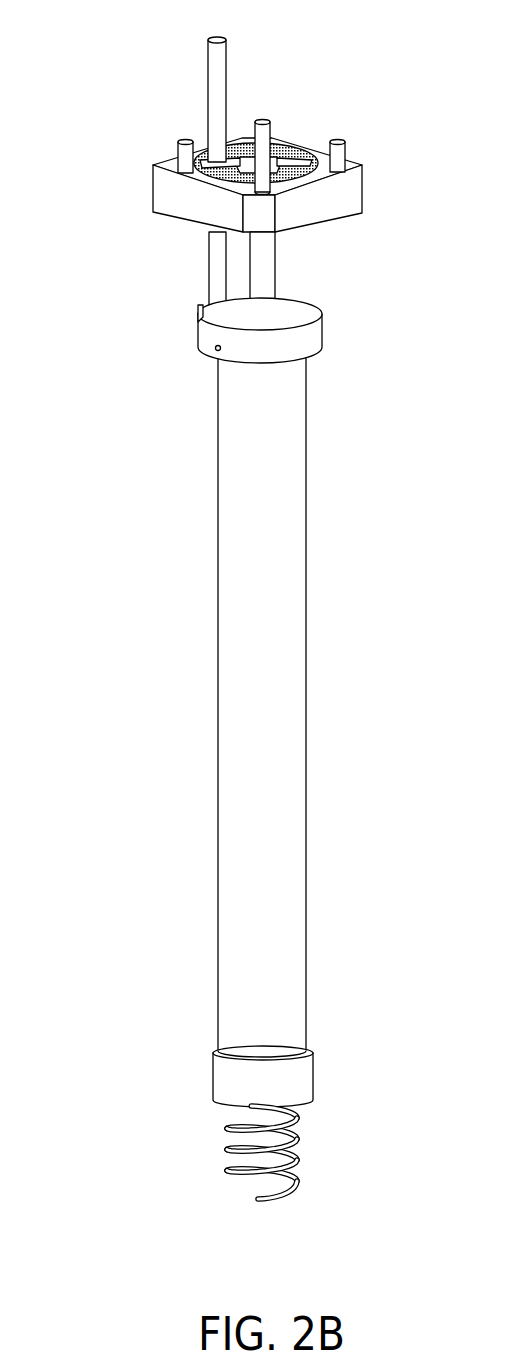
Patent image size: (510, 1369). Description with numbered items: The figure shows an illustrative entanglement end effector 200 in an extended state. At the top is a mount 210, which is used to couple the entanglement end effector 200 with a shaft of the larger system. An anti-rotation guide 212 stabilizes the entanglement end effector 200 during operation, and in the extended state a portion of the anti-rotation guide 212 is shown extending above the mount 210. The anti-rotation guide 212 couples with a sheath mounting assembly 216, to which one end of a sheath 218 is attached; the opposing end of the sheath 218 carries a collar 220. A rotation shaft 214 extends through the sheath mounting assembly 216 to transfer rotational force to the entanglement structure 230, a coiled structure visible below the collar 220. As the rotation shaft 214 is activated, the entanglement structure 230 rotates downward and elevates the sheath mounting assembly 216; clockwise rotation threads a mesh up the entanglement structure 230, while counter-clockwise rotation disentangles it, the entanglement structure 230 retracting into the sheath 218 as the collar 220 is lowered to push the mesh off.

The entanglement end effector 200 is at (103, 88).
The mount 210 is at (359, 190).
The anti-rotation guide 212 is at (228, 60).
The rotation shaft 214 is at (275, 290).
The sheath mounting assembly 216 is at (322, 330).
The sheath 218 is at (306, 624).
The collar 220 is at (313, 1070).
The entanglement structure 230 is at (297, 1182).